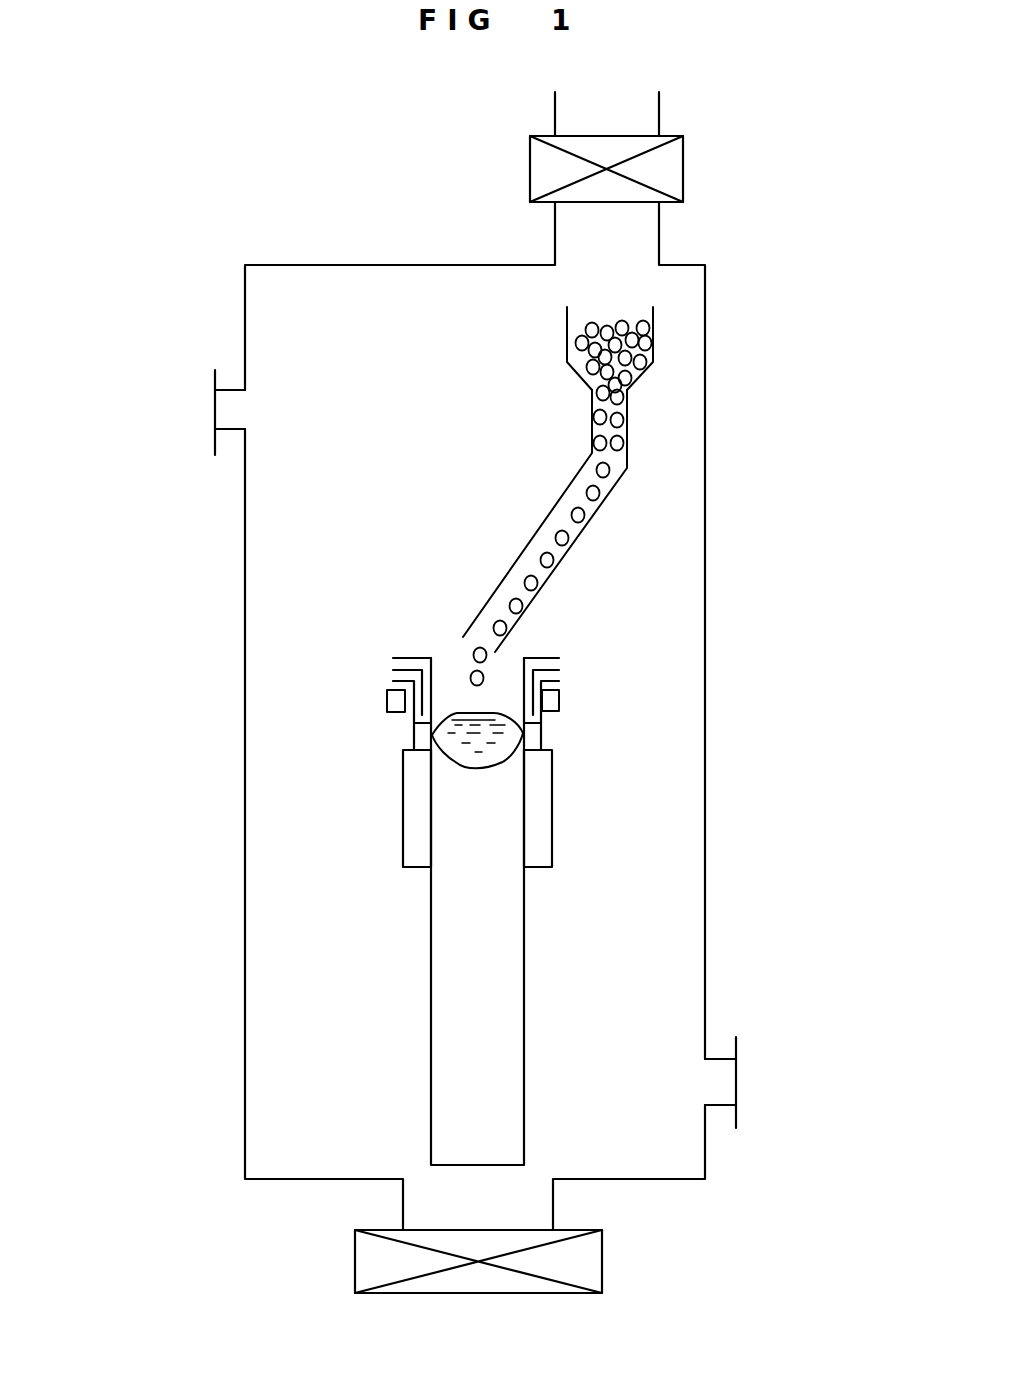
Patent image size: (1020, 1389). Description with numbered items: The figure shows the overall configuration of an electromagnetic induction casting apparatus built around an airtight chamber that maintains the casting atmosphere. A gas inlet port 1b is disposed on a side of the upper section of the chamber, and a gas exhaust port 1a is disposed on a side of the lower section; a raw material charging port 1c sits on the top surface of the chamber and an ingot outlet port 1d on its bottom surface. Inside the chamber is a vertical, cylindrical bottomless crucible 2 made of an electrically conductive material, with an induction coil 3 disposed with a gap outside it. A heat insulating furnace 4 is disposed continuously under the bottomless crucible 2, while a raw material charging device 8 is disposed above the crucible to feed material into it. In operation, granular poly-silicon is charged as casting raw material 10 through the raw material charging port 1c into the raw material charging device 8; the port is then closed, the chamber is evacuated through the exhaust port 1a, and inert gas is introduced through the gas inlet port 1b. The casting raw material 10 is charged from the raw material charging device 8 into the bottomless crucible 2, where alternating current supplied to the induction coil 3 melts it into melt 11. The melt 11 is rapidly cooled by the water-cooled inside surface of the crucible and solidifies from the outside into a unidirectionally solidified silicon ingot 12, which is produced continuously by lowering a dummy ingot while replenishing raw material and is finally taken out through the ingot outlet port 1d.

The gas exhaust port 1a is at (738, 1065).
The gas inlet port 1b is at (212, 422).
The raw material charging port 1c is at (683, 168).
The ingot outlet port 1d is at (602, 1262).
The bottomless crucible 2 is at (545, 655).
The induction coil 3 is at (559, 700).
The heat insulating furnace 4 is at (552, 838).
The raw material charging device 8 is at (627, 425).
The casting raw material 10 is at (653, 343).
The melt 11 is at (440, 739).
The ingot 12 is at (515, 960).